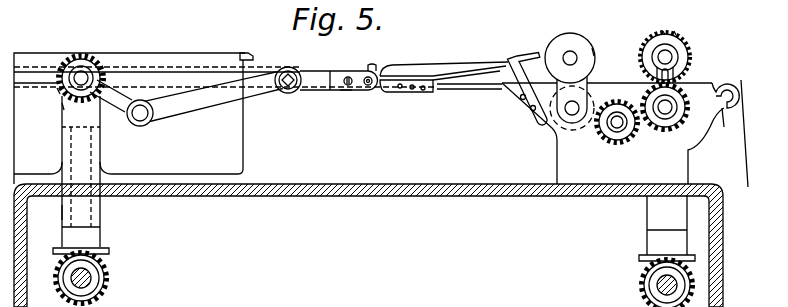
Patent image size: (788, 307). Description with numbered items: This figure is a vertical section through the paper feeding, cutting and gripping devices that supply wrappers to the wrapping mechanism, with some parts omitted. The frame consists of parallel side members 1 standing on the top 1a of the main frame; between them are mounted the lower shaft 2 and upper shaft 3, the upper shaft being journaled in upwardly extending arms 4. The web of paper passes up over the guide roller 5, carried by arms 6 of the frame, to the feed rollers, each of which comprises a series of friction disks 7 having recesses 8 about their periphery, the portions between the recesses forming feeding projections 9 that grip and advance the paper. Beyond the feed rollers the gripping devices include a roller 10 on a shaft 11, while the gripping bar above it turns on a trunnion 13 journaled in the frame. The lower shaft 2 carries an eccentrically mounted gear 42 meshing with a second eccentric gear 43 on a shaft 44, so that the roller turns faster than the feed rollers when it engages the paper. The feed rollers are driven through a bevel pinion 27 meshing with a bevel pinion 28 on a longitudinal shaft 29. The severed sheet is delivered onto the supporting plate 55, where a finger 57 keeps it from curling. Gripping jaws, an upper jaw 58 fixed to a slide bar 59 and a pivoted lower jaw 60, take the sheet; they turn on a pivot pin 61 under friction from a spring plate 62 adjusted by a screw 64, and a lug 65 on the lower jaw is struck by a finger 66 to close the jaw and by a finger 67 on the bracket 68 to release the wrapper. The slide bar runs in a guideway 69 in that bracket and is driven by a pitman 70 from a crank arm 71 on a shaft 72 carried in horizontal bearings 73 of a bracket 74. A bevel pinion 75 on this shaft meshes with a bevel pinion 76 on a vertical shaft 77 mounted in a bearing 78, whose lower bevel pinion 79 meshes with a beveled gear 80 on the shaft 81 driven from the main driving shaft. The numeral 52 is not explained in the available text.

The side members 1 is at (557, 165).
The top of the main frame 1a is at (300, 198).
The lower shaft 2 is at (676, 108).
The upper shaft 3 is at (680, 55).
The upwardly extending arms 4 is at (680, 45).
The guide roller 5 is at (734, 125).
The arms 6 is at (733, 92).
The friction disks 7 is at (690, 50).
The recesses 8 is at (675, 33).
The feeding projections 9 is at (667, 33).
The roller 10 is at (555, 118).
The shaft 11 is at (572, 112).
The trunnion 13 is at (573, 58).
The bevel pinion 27 is at (640, 257).
The bevel pinion 28 is at (650, 287).
The shaft 29 is at (690, 284).
The eccentrically mounted gear 42 is at (662, 125).
The eccentrically mounted gear 43 is at (606, 137).
The shaft 44 is at (622, 122).
The disc rim 52 is at (594, 52).
The supporting plate 55 is at (465, 90).
The finger 57 is at (507, 64).
The upper jaw 58 is at (385, 70).
The slide bar 59 is at (320, 77).
The lower jaw 60 is at (385, 93).
The pivot pin 61 is at (367, 86).
The spring plate 62 is at (347, 86).
The screw 64 is at (345, 92).
The lug 65 is at (371, 66).
The finger 66 is at (436, 70).
The finger 67 is at (253, 60).
The bracket 68 is at (232, 158).
The guideway 69 is at (48, 73).
The pitman 70 is at (190, 110).
The crank arm 71 is at (120, 108).
The shaft 72 is at (86, 74).
The horizontal bearings 73 is at (84, 53).
The bracket 74 is at (62, 152).
The bevel pinion 75 is at (57, 90).
The bevel pinion 76 is at (62, 108).
The vertical shaft 77 is at (83, 208).
The bearing 78 is at (68, 215).
The bevel pinion 79 is at (88, 241).
The beveled gear 80 is at (104, 268).
The shaft 81 is at (92, 284).